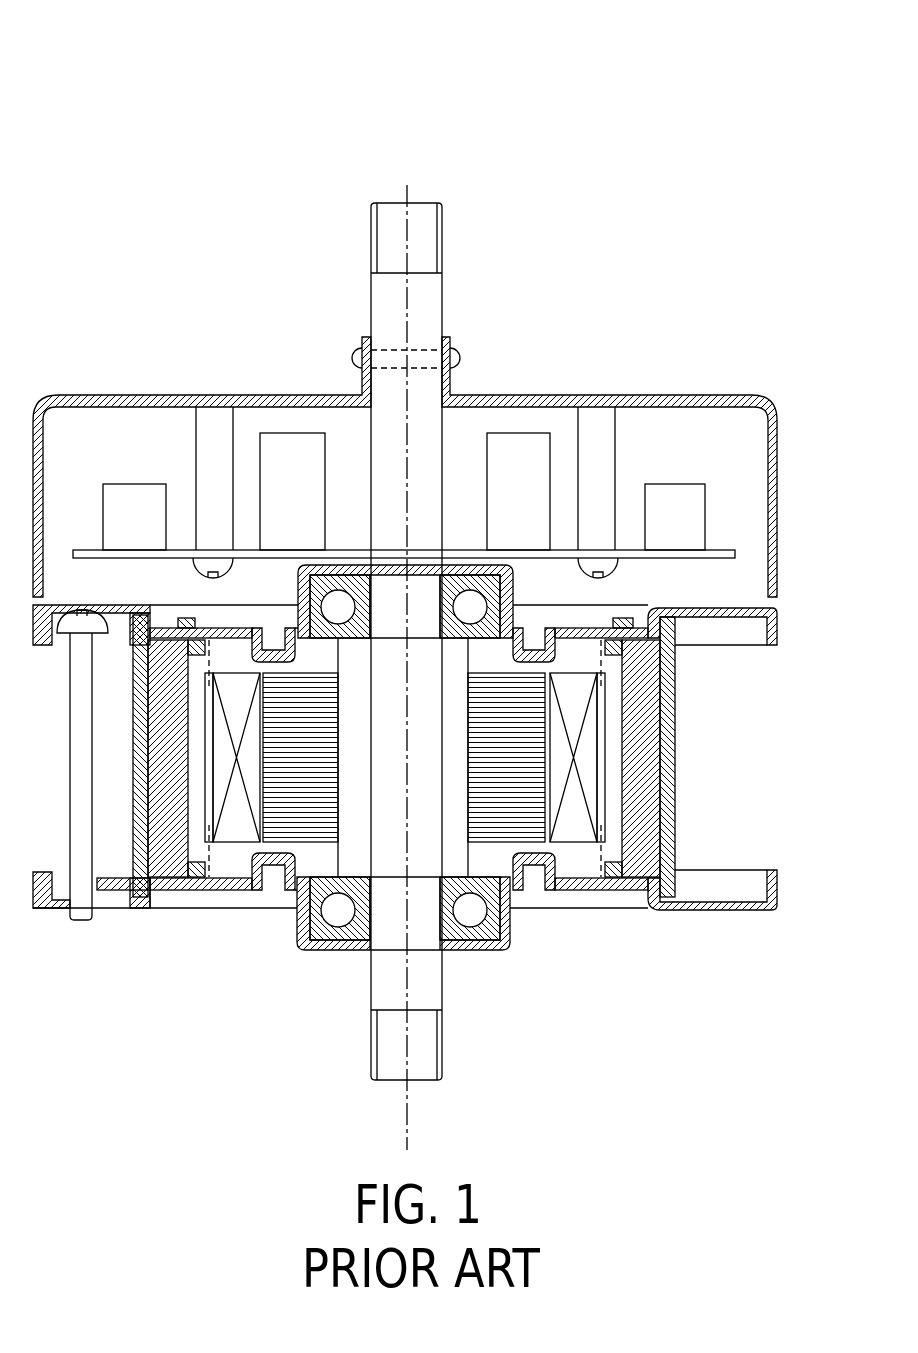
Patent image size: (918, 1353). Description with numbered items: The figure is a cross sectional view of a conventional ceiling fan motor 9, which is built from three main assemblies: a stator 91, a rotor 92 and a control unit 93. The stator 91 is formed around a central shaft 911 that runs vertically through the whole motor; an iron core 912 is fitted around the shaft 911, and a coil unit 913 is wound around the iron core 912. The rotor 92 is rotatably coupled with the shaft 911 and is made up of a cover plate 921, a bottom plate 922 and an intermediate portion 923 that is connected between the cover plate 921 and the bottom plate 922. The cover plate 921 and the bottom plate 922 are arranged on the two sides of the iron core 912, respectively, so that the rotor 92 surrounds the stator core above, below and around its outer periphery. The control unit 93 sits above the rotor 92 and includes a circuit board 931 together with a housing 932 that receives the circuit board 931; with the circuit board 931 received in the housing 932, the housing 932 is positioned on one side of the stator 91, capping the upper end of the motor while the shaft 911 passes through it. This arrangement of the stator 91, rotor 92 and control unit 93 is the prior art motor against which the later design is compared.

The ceiling fan motor 9 is at (174, 114).
The stator 91 is at (345, 188).
The shaft 911 is at (438, 228).
The iron core 912 is at (510, 833).
The coil unit 913 is at (577, 835).
The rotor 92 is at (112, 954).
The cover plate 921 is at (770, 608).
The bottom plate 922 is at (737, 905).
The intermediate portion 923 is at (670, 775).
The control unit 93 is at (739, 369).
The circuit board 931 is at (628, 552).
The housing 932 is at (572, 395).